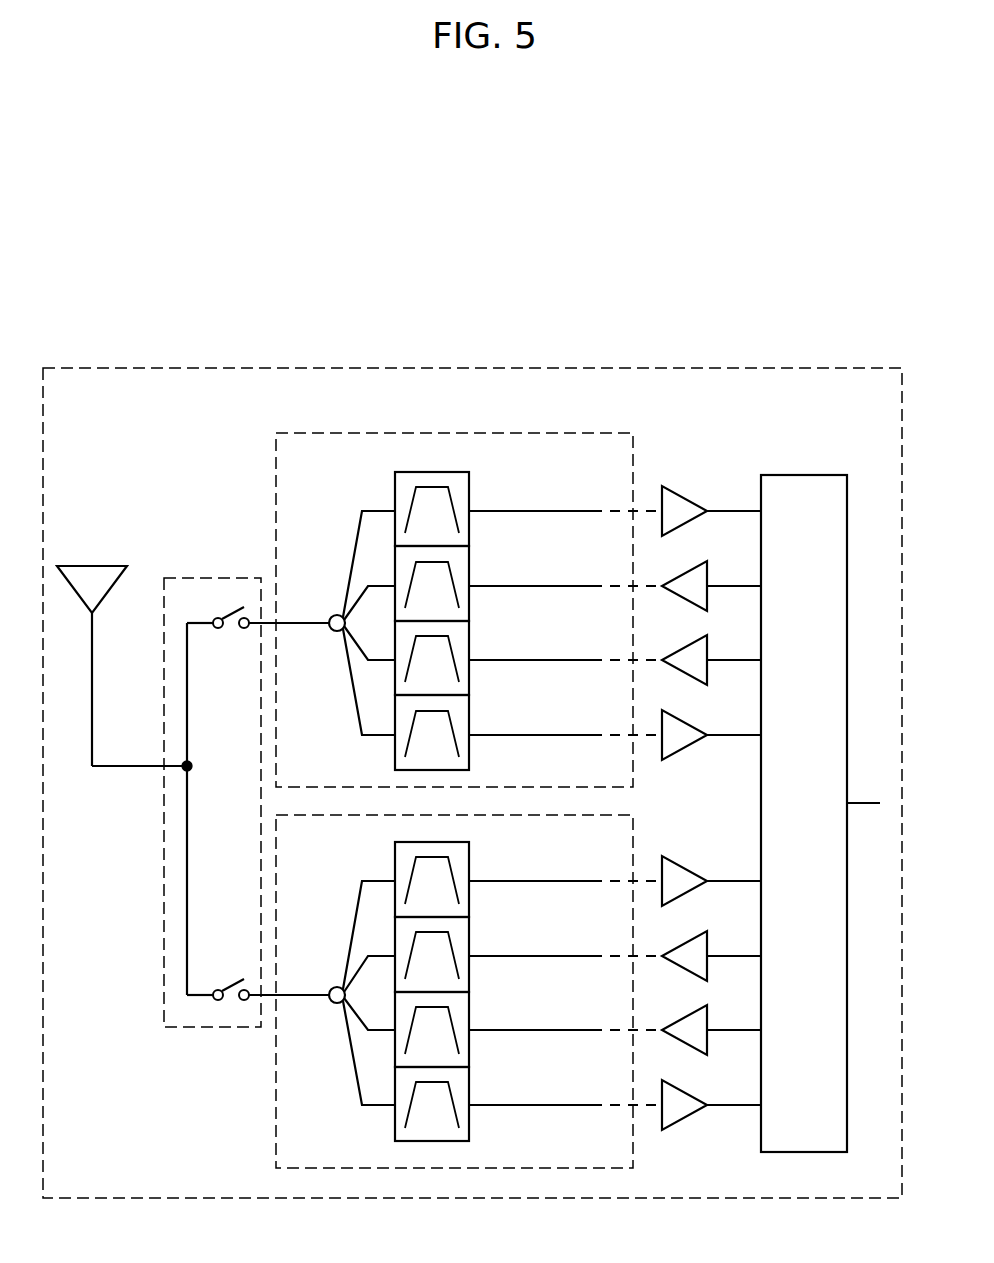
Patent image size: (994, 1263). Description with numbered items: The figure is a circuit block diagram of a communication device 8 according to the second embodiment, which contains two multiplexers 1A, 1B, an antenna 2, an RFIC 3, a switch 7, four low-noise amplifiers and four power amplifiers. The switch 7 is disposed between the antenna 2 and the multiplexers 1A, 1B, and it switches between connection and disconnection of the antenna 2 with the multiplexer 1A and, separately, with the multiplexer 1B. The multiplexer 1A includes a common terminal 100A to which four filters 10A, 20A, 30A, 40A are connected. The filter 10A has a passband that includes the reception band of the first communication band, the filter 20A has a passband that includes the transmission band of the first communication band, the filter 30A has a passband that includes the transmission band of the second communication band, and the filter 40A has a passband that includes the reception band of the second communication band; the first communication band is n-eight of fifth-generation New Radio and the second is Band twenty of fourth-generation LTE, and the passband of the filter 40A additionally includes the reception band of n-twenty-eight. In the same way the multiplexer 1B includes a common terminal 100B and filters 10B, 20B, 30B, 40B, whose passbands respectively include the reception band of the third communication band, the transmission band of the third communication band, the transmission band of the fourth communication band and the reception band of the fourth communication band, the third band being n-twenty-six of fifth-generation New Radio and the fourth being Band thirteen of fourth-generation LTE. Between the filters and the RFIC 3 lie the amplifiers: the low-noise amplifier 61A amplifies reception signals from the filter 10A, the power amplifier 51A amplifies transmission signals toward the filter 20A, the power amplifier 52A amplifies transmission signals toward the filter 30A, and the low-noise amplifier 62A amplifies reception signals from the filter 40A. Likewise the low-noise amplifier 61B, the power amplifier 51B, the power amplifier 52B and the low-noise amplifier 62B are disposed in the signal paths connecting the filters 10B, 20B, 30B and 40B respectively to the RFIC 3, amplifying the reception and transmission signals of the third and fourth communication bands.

The communication device 8 is at (845, 368).
The antenna 2 is at (90, 566).
The switch 7 is at (218, 578).
The RFIC 3 is at (813, 475).
The multiplexer 1A is at (602, 433).
The multiplexer 1B is at (617, 815).
The common terminal 100A is at (329, 634).
The common terminal 100B is at (329, 1006).
The filter 10A is at (470, 484).
The filter 20A is at (470, 558).
The filter 30A is at (470, 633).
The filter 40A is at (470, 707).
The filter 10B is at (470, 854).
The filter 20B is at (470, 929).
The filter 30B is at (470, 1004).
The filter 40B is at (470, 1079).
The low-noise amplifier 61A is at (688, 498).
The power amplifier 51A is at (727, 558).
The power amplifier 52A is at (708, 673).
The low-noise amplifier 62A is at (685, 750).
The low-noise amplifier 61B is at (688, 868).
The power amplifier 51B is at (727, 928).
The power amplifier 52B is at (708, 1043).
The low-noise amplifier 62B is at (685, 1120).